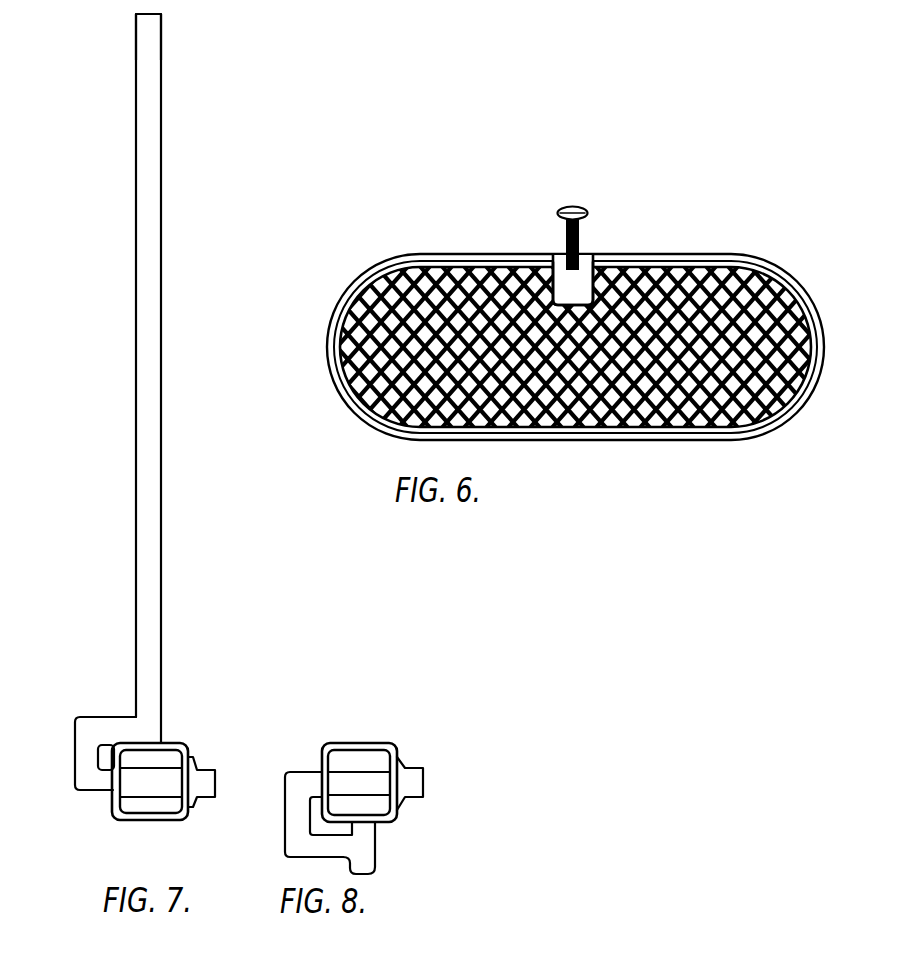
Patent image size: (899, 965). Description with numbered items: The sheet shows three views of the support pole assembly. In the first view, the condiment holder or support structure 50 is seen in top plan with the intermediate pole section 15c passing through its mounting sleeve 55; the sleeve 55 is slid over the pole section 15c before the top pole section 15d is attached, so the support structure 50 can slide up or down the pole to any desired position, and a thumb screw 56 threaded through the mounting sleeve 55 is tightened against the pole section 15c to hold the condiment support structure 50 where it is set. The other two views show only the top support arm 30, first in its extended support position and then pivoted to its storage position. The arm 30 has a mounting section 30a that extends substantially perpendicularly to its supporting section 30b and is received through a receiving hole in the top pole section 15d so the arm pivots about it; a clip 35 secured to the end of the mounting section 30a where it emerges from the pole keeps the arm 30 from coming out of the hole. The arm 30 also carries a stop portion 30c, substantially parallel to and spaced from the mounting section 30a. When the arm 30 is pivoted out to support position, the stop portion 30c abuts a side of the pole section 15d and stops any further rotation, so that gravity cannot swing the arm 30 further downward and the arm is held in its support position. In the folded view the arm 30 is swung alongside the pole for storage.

In FIG. 6, the intermediate pole section 15c is at (553, 262).
In FIG. 7, the top pole section 15d is at (168, 743).
In FIG. 8, the top pole section 15d is at (363, 743).
In FIG. 7, the support arm 30 is at (145, 593).
In FIG. 8, the support arm 30 is at (376, 853).
In FIG. 7, the mounting section 30a is at (142, 780).
In FIG. 8, the mounting section 30a is at (363, 783).
In FIG. 7, the supporting section 30b is at (145, 120).
In FIG. 7, the stop portion 30c is at (117, 730).
In FIG. 8, the stop portion 30c is at (307, 850).
In FIG. 7, the clip 35 is at (197, 758).
In FIG. 8, the clip 35 is at (398, 806).
In FIG. 6, the condiment support structure 50 is at (814, 388).
In FIG. 6, the mounting sleeve 55 is at (593, 262).
In FIG. 6, the thumb screw 56 is at (586, 211).